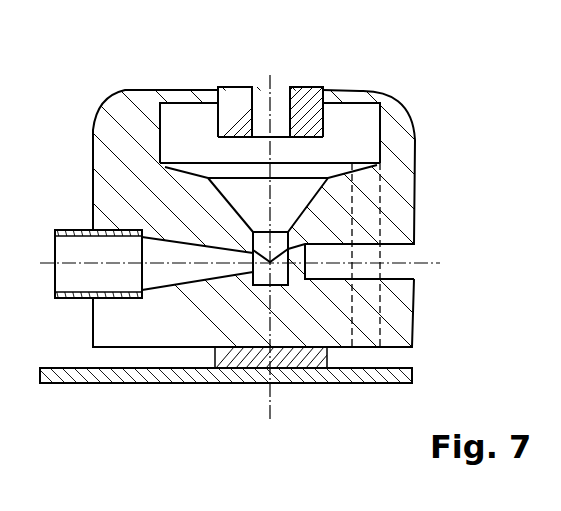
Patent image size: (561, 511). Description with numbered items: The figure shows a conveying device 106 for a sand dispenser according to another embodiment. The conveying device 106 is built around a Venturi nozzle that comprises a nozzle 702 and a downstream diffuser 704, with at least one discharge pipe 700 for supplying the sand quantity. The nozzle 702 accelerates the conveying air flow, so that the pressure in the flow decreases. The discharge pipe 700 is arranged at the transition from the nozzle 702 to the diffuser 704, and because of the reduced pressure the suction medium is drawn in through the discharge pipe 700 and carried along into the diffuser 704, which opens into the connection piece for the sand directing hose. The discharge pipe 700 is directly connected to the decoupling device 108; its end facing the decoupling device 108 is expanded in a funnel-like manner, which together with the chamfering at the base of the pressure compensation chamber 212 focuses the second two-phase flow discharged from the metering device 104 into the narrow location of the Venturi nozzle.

The metering device 104 is at (77, 111).
The decoupling device 108 is at (280, 141).
The pressure compensation chamber 212 is at (356, 124).
The discharge pipe 700 is at (282, 237).
The nozzle 702 is at (297, 268).
The diffuser 704 is at (180, 272).
The conveying device 106 is at (238, 396).